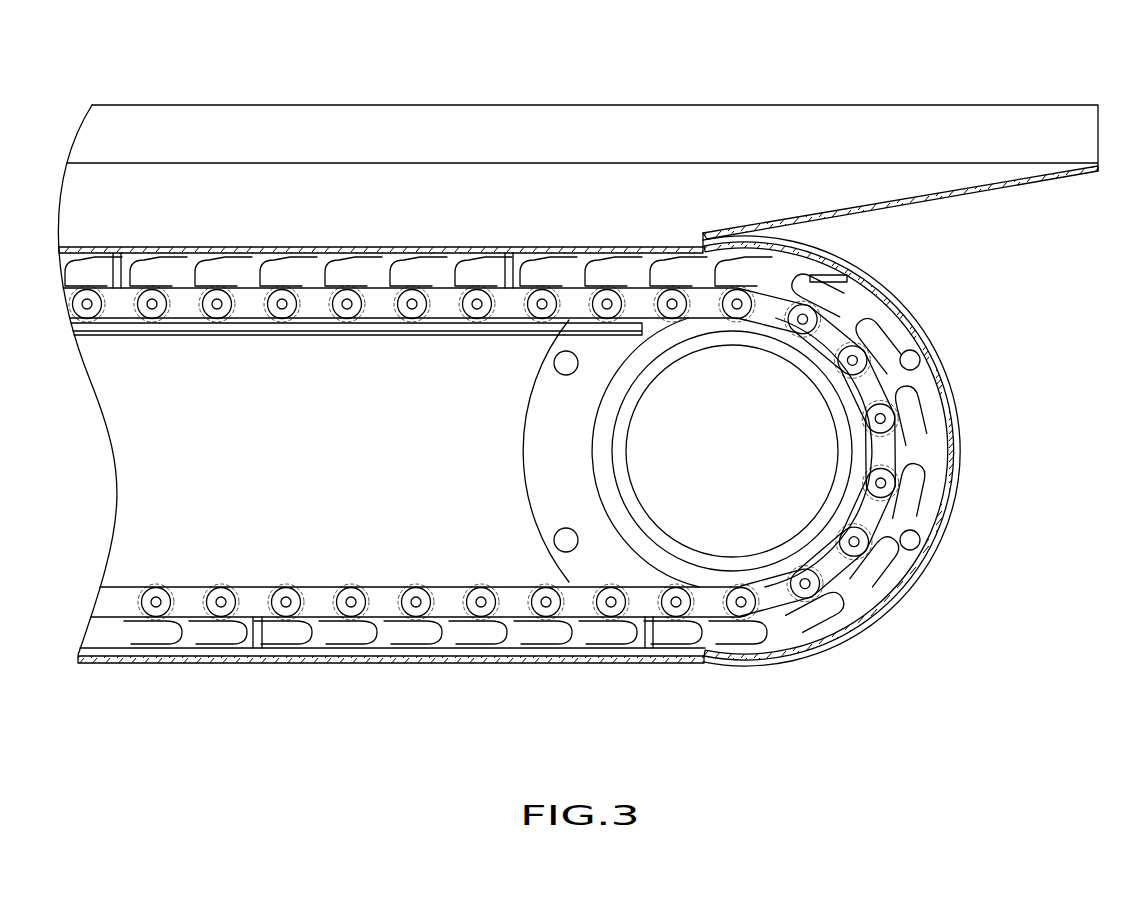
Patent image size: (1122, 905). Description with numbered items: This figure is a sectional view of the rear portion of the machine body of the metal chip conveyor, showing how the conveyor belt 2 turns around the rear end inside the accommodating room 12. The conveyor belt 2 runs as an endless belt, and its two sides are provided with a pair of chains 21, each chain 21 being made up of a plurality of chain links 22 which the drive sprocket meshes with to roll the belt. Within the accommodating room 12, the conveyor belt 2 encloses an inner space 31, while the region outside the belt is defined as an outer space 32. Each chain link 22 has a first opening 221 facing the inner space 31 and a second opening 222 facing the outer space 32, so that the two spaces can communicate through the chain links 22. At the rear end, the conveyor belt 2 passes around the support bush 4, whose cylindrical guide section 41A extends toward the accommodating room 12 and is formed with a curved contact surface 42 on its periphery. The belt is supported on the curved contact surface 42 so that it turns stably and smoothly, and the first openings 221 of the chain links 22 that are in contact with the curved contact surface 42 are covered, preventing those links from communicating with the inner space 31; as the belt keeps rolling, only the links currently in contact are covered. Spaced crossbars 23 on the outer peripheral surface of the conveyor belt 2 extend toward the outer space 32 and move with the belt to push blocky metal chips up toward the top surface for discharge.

The conveyor belt 2 is at (165, 246).
The chain 21 is at (248, 297).
The accommodating room 12 is at (307, 200).
The support bush 4 is at (594, 372).
The guide section 41A is at (702, 342).
The curved contact surface 42 is at (840, 318).
The crossbar 23 is at (880, 377).
The chain link 22 is at (452, 597).
The first opening 221 is at (438, 588).
The second opening 222 is at (448, 620).
The inner space 31 is at (200, 555).
The outer space 32 is at (356, 660).